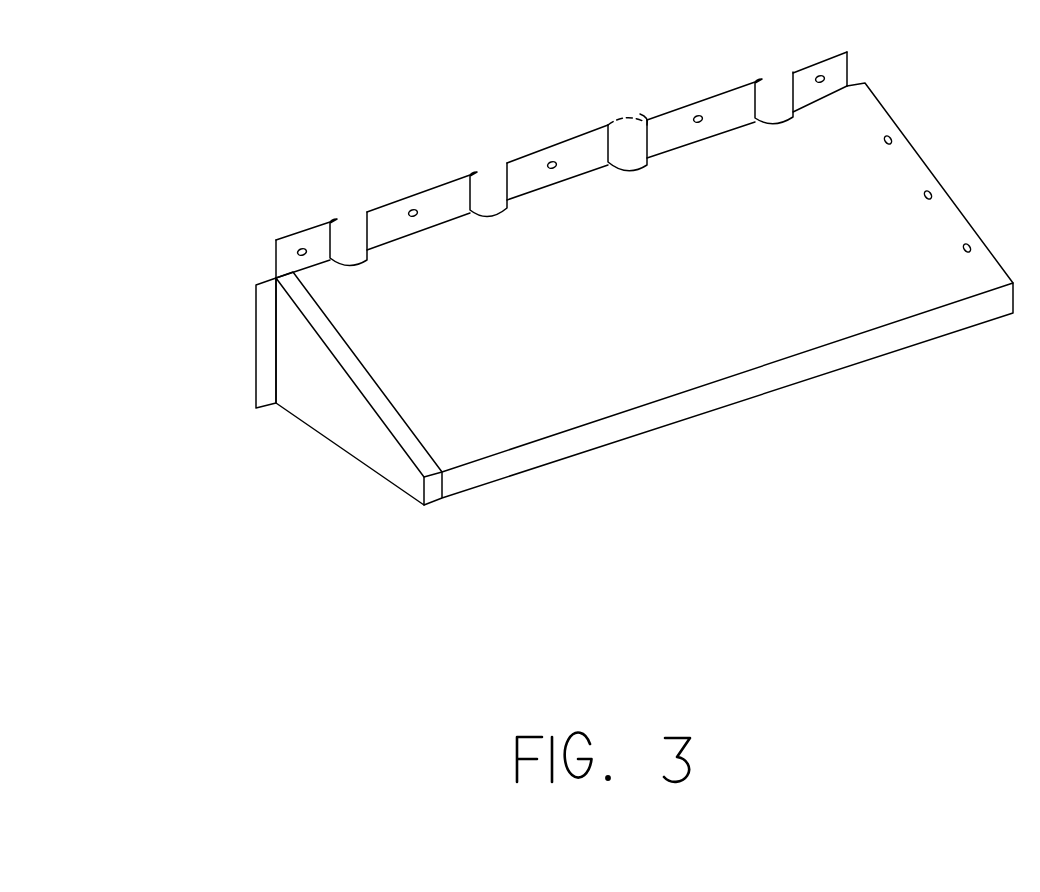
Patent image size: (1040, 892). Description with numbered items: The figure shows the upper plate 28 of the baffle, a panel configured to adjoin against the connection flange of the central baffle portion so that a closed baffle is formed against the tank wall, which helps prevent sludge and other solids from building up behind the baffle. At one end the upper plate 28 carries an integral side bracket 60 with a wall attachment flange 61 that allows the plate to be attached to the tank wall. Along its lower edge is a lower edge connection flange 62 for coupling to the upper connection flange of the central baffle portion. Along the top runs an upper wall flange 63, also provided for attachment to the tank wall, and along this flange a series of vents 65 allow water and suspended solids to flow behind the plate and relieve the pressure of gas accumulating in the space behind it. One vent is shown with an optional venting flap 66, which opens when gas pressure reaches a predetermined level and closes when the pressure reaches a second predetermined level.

The upper plate 28 is at (645, 358).
The integral side bracket 60 is at (353, 428).
The wall attachment flange 61 is at (263, 332).
The lower edge connection flange 62 is at (828, 360).
The upper wall flange 63 is at (400, 213).
The vents 65 is at (488, 190).
The venting flap 66 is at (625, 117).